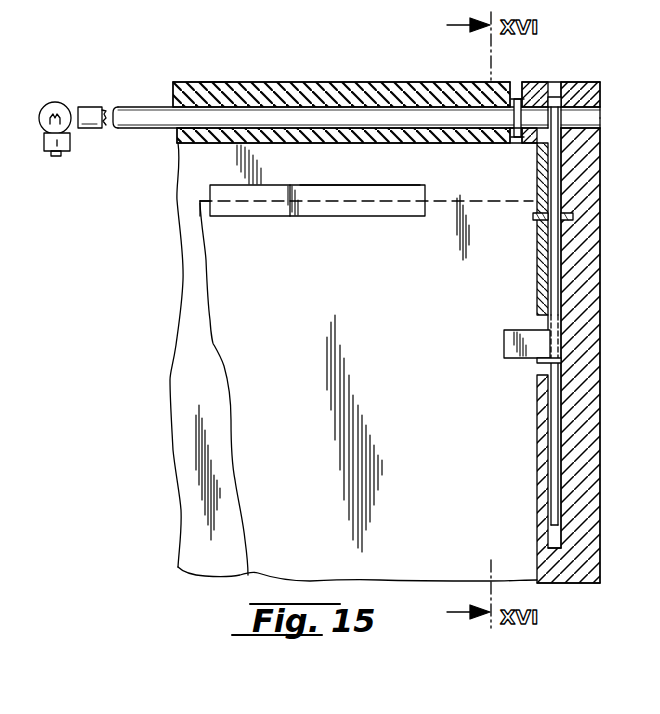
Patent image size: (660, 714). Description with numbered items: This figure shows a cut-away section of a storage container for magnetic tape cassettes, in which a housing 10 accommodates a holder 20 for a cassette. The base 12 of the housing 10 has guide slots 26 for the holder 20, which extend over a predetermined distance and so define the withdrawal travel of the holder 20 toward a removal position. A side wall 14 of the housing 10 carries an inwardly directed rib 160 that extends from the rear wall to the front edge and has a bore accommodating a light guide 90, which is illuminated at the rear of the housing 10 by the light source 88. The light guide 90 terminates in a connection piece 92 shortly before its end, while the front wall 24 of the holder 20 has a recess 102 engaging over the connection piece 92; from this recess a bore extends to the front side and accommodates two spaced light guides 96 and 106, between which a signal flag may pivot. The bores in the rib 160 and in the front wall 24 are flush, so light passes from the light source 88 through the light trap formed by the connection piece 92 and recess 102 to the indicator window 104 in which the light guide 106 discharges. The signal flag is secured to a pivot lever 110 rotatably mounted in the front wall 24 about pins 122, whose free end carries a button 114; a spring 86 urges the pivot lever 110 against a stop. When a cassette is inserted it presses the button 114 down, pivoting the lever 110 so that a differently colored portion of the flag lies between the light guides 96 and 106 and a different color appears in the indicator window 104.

The housing 10 is at (215, 72).
The base 12 is at (183, 397).
The side wall 14 is at (256, 95).
The holder 20 is at (612, 508).
The front wall 24 is at (585, 403).
The guide slots 26 is at (340, 205).
The spring 86 is at (553, 403).
The light source 88 is at (62, 108).
The light guide 90 is at (139, 113).
The connection piece 92 is at (518, 99).
The light guide 96 is at (541, 104).
The recess 102 is at (518, 140).
The indicator window 104 is at (600, 112).
The light guide 106 is at (600, 125).
The pivot lever 110 is at (552, 190).
The button 114 is at (505, 344).
The pins 122 is at (535, 216).
The rib 160 is at (192, 136).